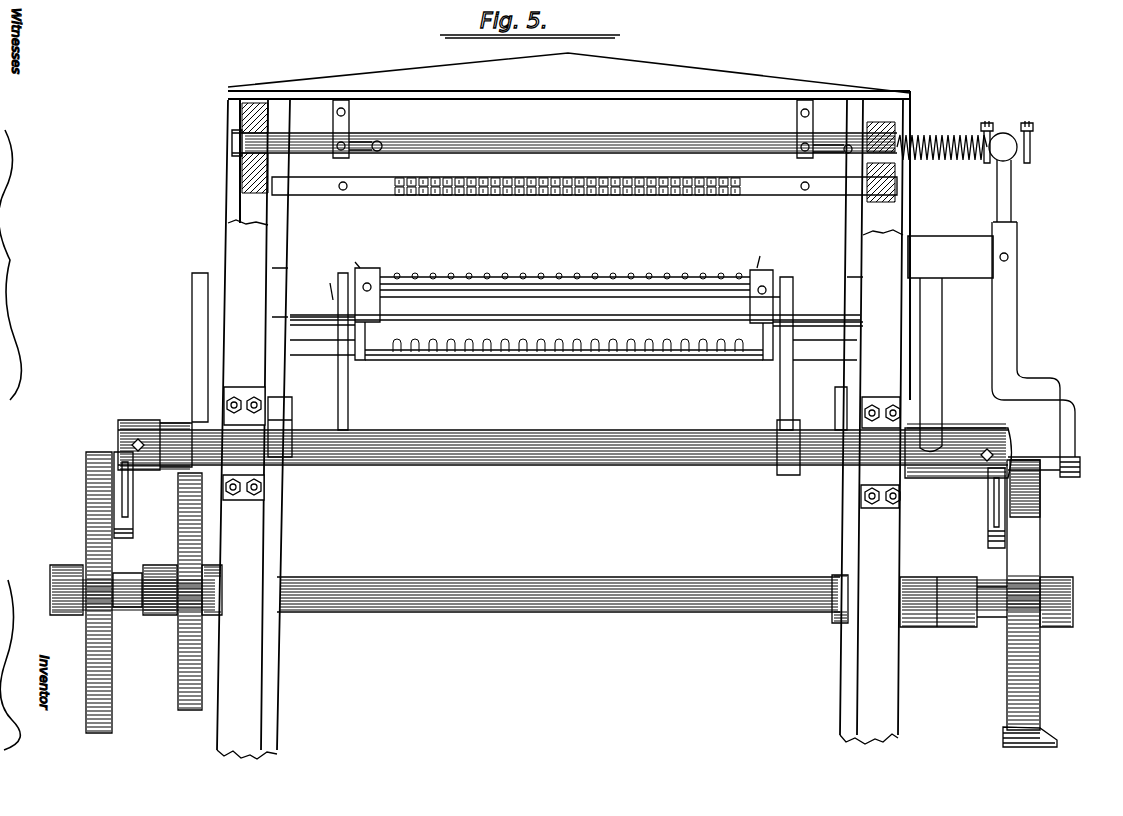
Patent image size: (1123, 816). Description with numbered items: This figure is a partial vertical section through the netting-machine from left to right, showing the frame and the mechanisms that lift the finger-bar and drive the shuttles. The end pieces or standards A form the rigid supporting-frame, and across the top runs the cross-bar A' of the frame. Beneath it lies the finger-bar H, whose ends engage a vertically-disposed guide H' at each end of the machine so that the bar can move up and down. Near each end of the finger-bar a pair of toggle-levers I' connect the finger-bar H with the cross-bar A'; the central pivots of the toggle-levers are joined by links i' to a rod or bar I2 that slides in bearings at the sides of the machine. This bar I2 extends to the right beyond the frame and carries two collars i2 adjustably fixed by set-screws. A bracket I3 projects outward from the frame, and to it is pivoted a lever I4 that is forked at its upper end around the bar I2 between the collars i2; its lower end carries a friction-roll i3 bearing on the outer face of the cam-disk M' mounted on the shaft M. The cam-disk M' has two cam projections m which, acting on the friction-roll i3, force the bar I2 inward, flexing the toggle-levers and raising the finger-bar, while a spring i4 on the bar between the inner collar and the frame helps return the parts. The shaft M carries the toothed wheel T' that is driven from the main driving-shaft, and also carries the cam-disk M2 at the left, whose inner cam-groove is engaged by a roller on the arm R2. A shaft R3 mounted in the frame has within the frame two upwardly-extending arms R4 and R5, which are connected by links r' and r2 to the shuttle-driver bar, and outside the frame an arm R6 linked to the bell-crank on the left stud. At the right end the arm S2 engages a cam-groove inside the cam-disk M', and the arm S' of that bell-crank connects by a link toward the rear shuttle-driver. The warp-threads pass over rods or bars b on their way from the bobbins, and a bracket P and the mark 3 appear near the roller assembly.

The cross-bar of the frame A' is at (569, 226).
The end pieces or standards A is at (576, 429).
The rod or bar I2 is at (520, 143).
The finger-bar H is at (569, 166).
The toggle-levers I' is at (555, 129).
The links i' is at (600, 148).
The spring i4 is at (960, 132).
The collars i2 is at (1050, 185).
The lever I4 is at (1018, 300).
The bracket I3 is at (950, 257).
The arm of the bell-crank lever S' is at (945, 365).
The friction-roll i3 is at (1080, 467).
The bearing bracket P is at (360, 318).
The mark 3 is at (328, 285).
The upwardly-extending arm R5 is at (343, 368).
The upwardly-extending arm R4 is at (703, 388).
The rods or bars b is at (530, 362).
The vertically-disposed guide H' is at (557, 345).
The link r2 is at (340, 248).
The link r' is at (753, 250).
The arm R6 is at (155, 305).
The shaft R3 is at (485, 460).
The arm R2 is at (125, 520).
The arm S2 is at (968, 508).
The cam-disk M2 is at (75, 550).
The shaft M is at (152, 615).
The toothed wheel T' is at (178, 613).
The cam-disk M' is at (1041, 595).
The cam projections m is at (1065, 744).